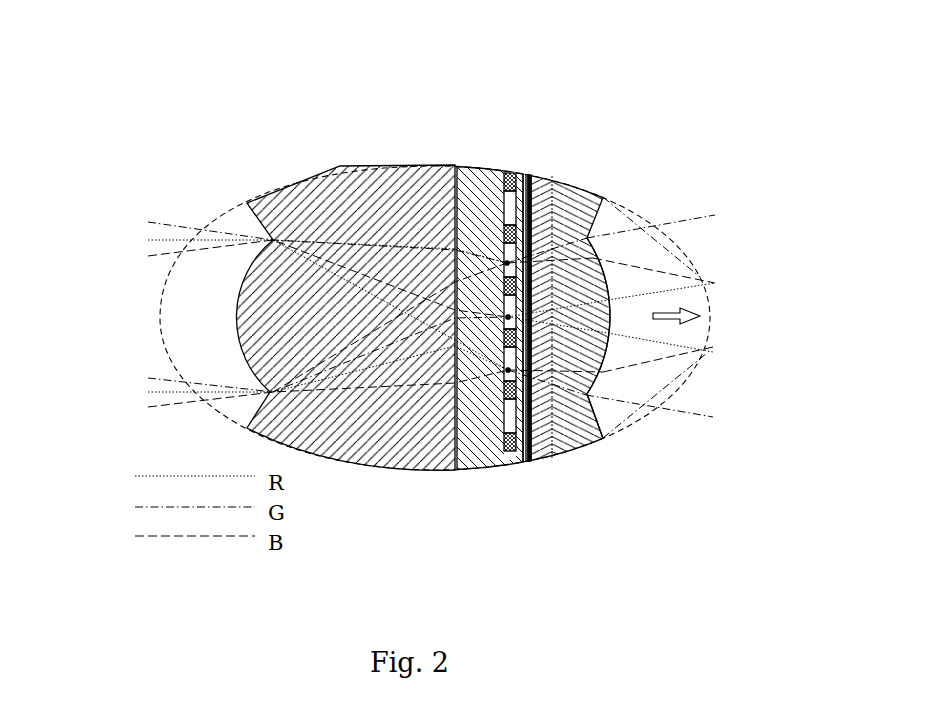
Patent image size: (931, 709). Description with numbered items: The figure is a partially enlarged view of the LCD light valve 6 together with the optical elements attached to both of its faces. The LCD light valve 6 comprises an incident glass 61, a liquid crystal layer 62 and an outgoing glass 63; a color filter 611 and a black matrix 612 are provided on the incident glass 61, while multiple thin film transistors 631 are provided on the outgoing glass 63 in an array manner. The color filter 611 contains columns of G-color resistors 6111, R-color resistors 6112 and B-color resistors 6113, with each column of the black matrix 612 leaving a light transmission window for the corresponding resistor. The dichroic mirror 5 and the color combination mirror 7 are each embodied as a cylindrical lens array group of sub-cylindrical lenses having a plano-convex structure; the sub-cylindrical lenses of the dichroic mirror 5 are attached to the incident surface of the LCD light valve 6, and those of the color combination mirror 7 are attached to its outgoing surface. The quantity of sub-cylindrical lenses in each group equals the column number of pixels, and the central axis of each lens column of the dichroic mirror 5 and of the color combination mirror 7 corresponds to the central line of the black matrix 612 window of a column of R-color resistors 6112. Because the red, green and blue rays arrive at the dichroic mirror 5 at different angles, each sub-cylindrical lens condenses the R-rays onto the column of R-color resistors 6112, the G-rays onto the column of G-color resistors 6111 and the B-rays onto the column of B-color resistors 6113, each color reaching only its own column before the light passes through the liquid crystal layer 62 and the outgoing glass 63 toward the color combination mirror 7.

The dichroic mirror 5 is at (420, 467).
The LCD light valve 6 is at (490, 303).
The incident glass 61 is at (441, 303).
The color filter 611 is at (441, 212).
The G-color resistor 6111 is at (507, 263).
The R-color resistor 6112 is at (508, 317).
The B-color resistor 6113 is at (508, 370).
The black matrix 612 is at (515, 462).
The liquid crystal layer 62 is at (523, 460).
The thin film transistor 631 is at (530, 458).
The outgoing glass 63 is at (597, 348).
The color combination mirror 7 is at (580, 443).